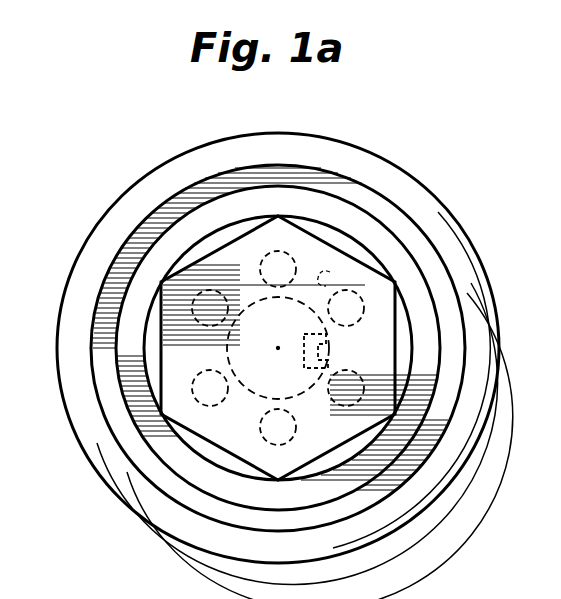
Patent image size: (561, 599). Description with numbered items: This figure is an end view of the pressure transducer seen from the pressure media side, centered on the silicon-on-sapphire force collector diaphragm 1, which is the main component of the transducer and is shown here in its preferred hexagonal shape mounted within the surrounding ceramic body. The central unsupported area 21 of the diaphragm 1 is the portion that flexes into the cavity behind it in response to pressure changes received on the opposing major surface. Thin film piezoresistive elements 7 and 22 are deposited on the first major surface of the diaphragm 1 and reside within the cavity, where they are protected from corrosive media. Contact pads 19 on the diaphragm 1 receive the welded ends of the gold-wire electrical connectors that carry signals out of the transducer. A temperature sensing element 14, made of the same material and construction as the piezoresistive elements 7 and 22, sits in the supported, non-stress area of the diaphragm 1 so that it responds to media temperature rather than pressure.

The force collector diaphragm 1 is at (390, 331).
The contact pads 19 is at (190, 270).
The temperature sensing element 14 is at (330, 282).
The unsupported area 21 is at (270, 332).
The piezoresistive element 7 is at (393, 448).
The piezoresistive element 22 is at (305, 342).